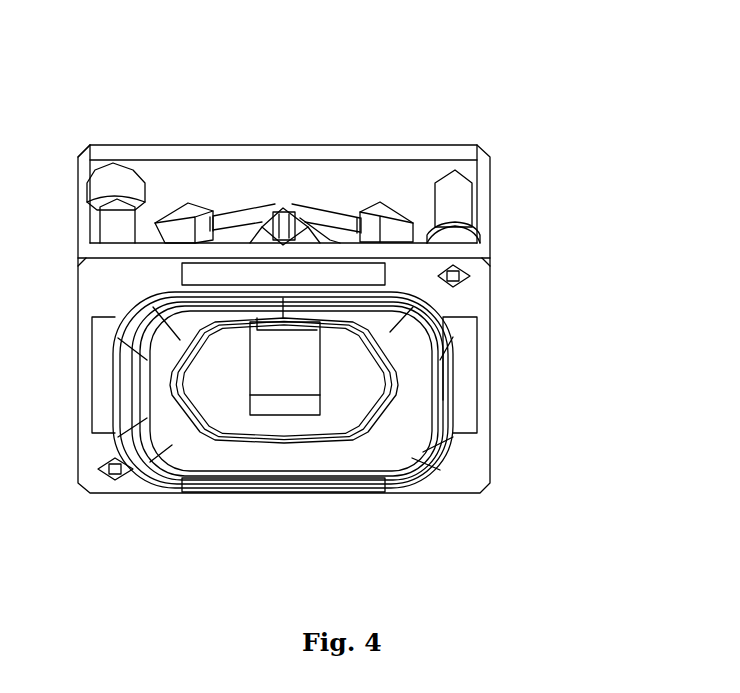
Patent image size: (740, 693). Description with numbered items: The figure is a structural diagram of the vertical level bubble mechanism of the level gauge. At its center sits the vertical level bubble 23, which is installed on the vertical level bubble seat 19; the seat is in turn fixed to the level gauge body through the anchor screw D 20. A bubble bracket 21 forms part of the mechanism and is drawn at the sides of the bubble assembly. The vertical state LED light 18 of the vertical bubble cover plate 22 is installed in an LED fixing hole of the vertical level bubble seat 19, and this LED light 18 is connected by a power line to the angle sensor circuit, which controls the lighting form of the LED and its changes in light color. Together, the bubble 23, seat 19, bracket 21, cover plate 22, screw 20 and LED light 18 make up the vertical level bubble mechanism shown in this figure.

The vertical state LED light 18 is at (283, 227).
The vertical level bubble seat 19 is at (328, 234).
The anchor screw D 20 is at (453, 272).
The bubble bracket 21 is at (467, 302).
The vertical bubble cover plate 22 is at (426, 342).
The vertical level bubble 23 is at (293, 382).